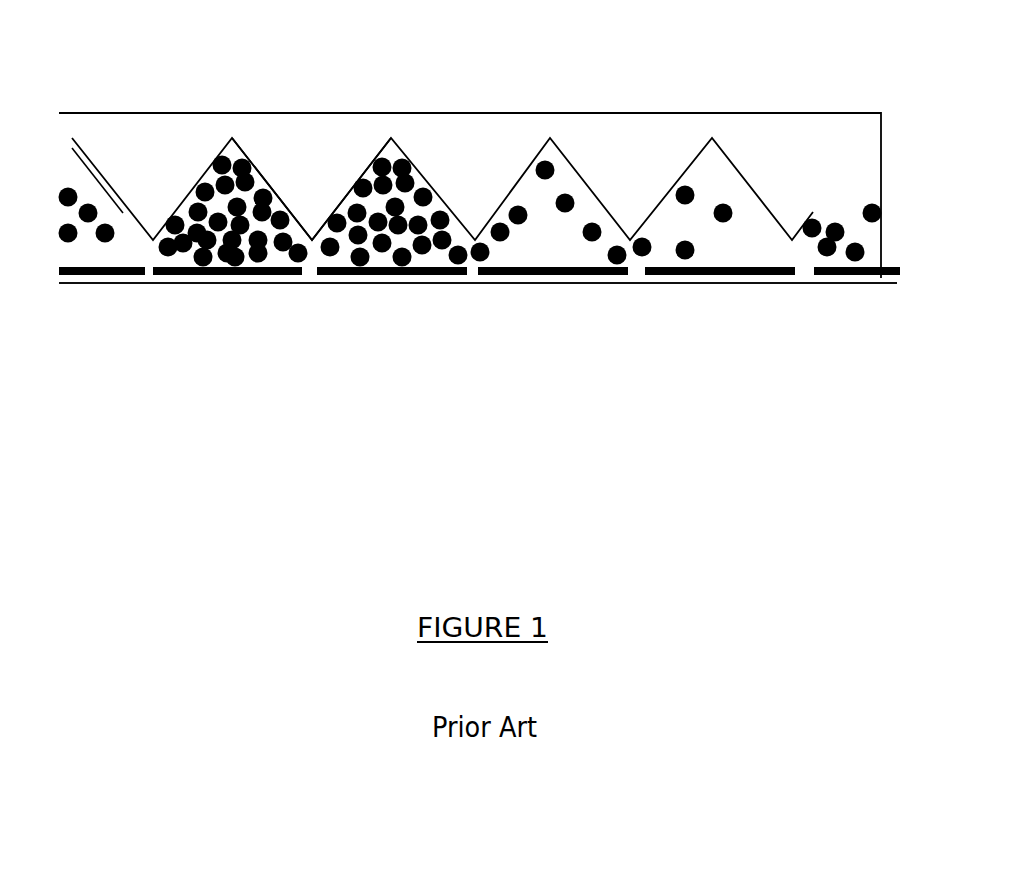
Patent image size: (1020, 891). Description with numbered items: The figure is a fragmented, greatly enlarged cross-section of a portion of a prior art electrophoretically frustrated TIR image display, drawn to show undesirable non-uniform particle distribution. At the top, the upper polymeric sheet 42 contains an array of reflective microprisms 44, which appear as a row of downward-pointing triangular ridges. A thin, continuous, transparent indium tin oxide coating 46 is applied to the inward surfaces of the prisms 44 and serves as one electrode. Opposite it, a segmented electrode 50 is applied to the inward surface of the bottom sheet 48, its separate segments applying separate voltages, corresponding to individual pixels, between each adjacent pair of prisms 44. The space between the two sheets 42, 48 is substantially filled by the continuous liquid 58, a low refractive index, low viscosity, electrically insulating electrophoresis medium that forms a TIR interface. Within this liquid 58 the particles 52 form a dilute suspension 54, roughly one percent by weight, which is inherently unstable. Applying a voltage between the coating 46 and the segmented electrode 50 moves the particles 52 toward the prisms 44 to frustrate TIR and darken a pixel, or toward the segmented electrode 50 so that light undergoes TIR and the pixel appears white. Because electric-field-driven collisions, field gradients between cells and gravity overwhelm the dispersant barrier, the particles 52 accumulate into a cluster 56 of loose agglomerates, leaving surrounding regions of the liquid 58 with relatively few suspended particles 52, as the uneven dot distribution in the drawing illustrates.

The upper polymeric sheet 42 is at (598, 110).
The reflective microprisms 44 is at (280, 142).
The indium tin oxide coating 46 is at (84, 164).
The bottom sheet 48 is at (512, 293).
The segmented electrode 50 is at (694, 283).
The particles 52 is at (738, 199).
The suspension 54 is at (412, 247).
The cluster 56 is at (188, 250).
The continuous liquid 58 is at (553, 235).